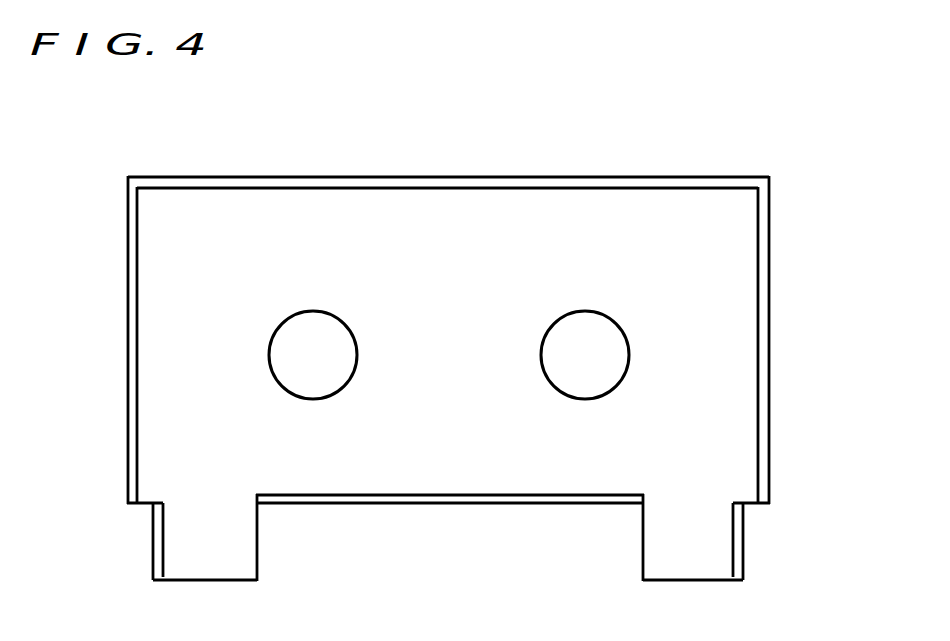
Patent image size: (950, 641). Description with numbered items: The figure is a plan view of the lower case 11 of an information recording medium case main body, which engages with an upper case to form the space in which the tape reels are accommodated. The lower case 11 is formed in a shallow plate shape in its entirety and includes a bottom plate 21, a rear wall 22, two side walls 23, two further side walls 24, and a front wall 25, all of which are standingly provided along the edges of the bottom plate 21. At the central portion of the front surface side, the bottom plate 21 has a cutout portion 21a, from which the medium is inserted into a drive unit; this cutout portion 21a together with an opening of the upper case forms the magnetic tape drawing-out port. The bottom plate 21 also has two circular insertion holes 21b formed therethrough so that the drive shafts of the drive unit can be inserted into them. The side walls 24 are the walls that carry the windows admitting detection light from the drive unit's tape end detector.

The lower case 11 is at (287, 119).
The bottom plate 21 is at (653, 217).
The cutout portion 21a is at (522, 537).
The insertion holes 21b is at (313, 340).
The rear wall 22 is at (418, 183).
The side walls 23 is at (130, 342).
The side walls 24 is at (156, 550).
The front wall 25 is at (455, 500).